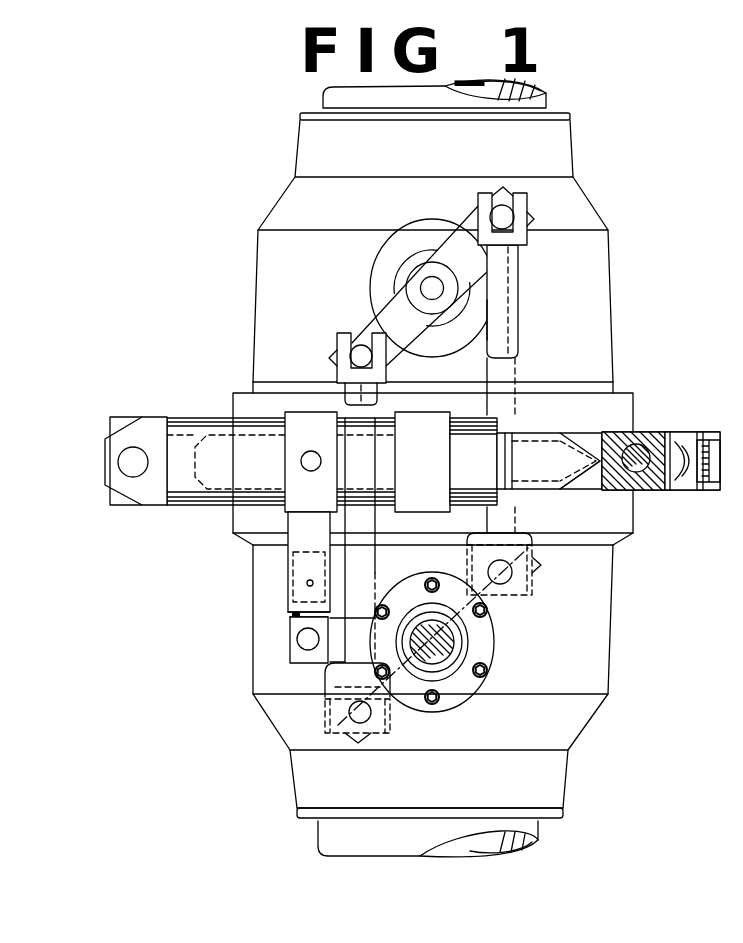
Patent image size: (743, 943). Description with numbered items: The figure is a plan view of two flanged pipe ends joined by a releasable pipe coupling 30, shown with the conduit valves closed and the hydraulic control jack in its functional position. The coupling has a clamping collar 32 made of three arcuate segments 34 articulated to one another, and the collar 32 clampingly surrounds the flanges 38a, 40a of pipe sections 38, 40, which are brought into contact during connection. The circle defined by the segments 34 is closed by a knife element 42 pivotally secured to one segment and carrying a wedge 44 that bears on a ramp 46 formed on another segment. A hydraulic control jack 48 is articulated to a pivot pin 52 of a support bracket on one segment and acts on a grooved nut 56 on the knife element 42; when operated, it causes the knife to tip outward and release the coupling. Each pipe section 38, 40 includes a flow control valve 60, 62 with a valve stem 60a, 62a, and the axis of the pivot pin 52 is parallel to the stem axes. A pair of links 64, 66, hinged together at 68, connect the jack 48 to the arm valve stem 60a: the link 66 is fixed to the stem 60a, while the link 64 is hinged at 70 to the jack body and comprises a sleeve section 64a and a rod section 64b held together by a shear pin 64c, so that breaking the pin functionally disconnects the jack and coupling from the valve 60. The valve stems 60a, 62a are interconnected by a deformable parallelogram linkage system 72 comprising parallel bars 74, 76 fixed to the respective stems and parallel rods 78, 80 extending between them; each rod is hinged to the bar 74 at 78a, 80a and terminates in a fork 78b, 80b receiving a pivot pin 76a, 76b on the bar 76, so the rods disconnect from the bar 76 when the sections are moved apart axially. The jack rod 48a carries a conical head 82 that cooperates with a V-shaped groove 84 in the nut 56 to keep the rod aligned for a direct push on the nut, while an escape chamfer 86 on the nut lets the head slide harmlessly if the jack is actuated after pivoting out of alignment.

The pipe coupling 30 is at (667, 422).
The clamping collar 32 is at (573, 420).
The arcuate segments 34 is at (572, 484).
The pipe section 38 is at (318, 832).
The flange 38a is at (235, 516).
The pipe section 40 is at (548, 100).
The flange 40a is at (245, 395).
The knife element 42 is at (650, 424).
The wedge 44 is at (688, 487).
The ramp 46 is at (710, 493).
The hydraulic control jack 48 is at (200, 420).
The jack rod 48a is at (497, 461).
The pivot pin 52 is at (127, 473).
The grooved nut 56 is at (668, 431).
The flow control valve 60 is at (603, 662).
The valve stem 60a is at (440, 647).
The flow control valve 62 is at (258, 268).
The valve stem 62a is at (430, 288).
The link 64 is at (284, 575).
The sleeve section 64a is at (290, 547).
The rod section 64b is at (292, 615).
The shear pin 64c is at (308, 585).
The link 66 is at (335, 650).
The hinge 68 is at (290, 645).
The hinge 70 is at (303, 461).
The parallelogram linkage system 72 is at (524, 285).
The bar 74 is at (506, 604).
The bar 76 is at (474, 226).
The pivot pin 76a is at (352, 353).
The pivot pin 76b is at (506, 217).
The rod 78 is at (345, 397).
The hinge 78a is at (327, 703).
The fork 78b is at (345, 335).
The rod 80 is at (518, 296).
The hinge 80a is at (512, 578).
The fork 80b is at (523, 193).
The conical head 82 is at (538, 445).
The V-shaped groove 84 is at (603, 465).
The escape chamfer 86 is at (618, 437).